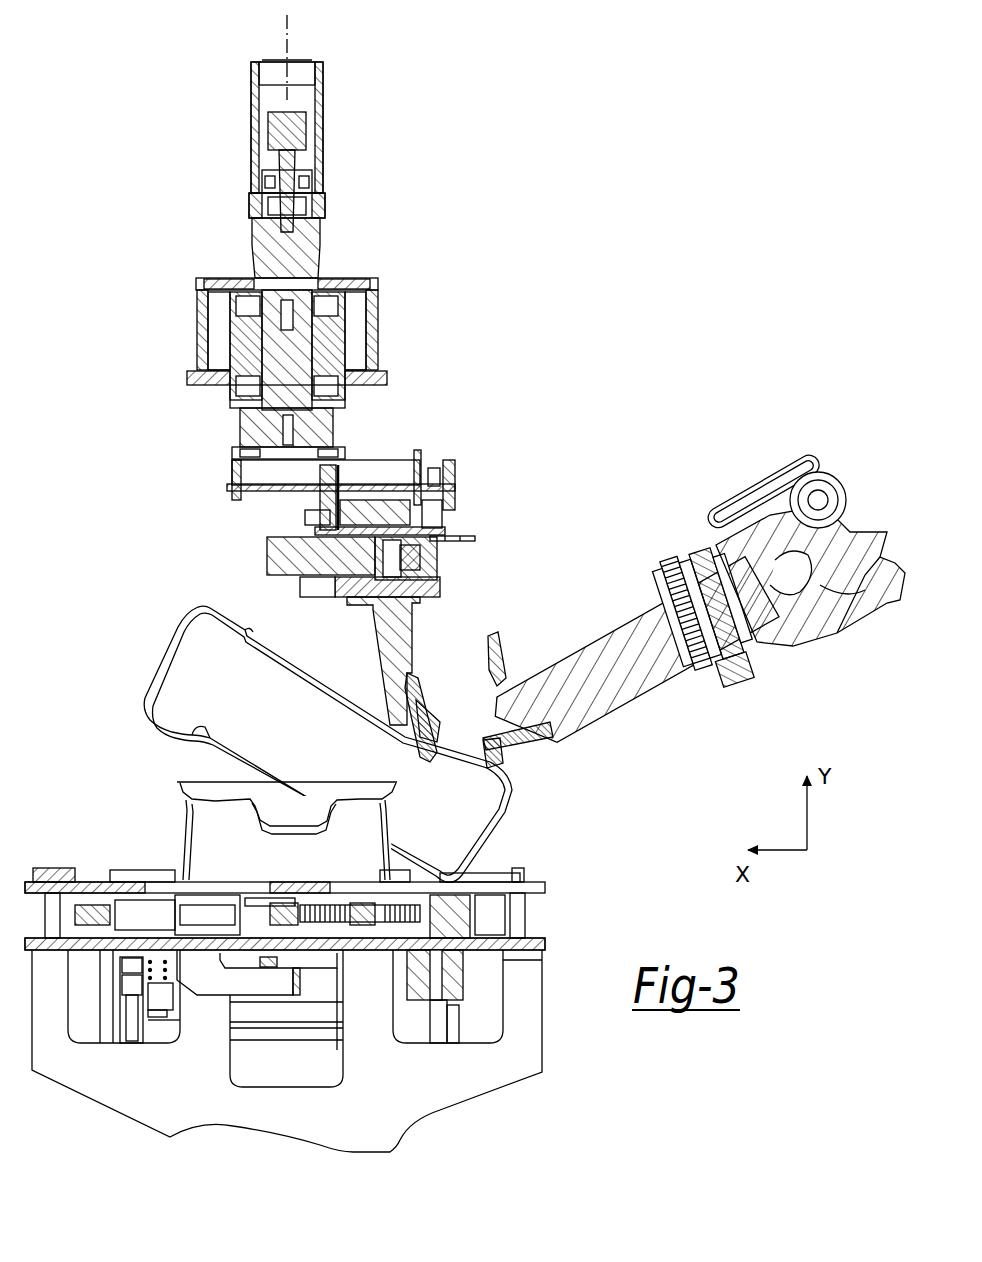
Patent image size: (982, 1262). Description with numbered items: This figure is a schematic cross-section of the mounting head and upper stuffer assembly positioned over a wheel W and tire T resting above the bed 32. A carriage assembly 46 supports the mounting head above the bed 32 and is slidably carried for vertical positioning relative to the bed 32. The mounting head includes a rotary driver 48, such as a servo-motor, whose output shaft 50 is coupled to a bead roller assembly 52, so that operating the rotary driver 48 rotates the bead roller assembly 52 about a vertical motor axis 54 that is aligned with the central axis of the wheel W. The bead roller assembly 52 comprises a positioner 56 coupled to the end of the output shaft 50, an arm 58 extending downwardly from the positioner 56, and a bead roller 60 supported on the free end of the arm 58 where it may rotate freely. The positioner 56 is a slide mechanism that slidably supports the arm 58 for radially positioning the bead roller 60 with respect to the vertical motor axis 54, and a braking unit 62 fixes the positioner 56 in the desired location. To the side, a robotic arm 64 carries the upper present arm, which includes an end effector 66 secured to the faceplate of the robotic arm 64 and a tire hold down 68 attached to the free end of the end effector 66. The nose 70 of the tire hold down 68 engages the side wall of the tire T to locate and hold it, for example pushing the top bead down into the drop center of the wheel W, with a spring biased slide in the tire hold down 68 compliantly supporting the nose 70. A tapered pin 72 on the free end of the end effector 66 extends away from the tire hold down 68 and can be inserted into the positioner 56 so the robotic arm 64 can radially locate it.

The bed 32 is at (90, 880).
The carriage assembly 46 is at (368, 288).
The rotary driver 48 is at (356, 252).
The output shaft 50 is at (287, 304).
The bead roller assembly 52 is at (412, 438).
The vertical motor axis 54 is at (292, 42).
The positioner 56 is at (483, 456).
The arm 58 is at (416, 612).
The bead roller 60 is at (428, 698).
The braking unit 62 is at (265, 508).
The robotic arm 64 is at (852, 600).
The end effector 66 is at (657, 668).
The tire hold down 68 is at (545, 742).
The nose 70 is at (505, 760).
The tapered pin 72 is at (497, 640).
The tire T is at (510, 822).
The wheel W is at (185, 812).